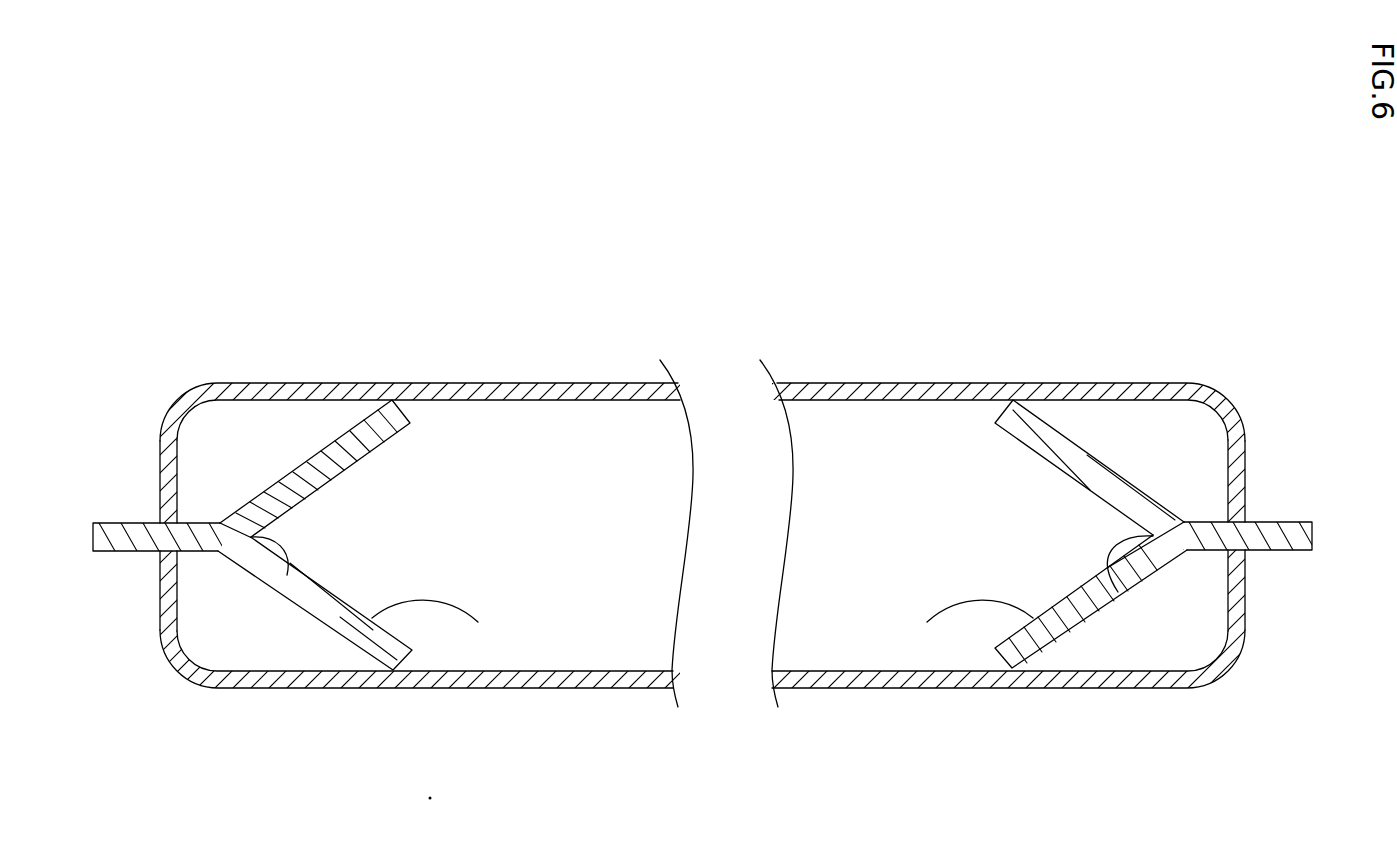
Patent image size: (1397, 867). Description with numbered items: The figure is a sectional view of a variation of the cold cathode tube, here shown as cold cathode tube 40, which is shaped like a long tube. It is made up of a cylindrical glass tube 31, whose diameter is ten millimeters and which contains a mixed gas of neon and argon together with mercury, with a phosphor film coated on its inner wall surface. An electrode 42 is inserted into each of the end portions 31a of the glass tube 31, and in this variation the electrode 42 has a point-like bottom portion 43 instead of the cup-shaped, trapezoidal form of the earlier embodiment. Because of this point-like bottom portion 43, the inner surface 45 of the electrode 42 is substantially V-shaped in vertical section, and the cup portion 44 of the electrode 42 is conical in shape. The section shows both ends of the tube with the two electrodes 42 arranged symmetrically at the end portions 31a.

The cold cathode tube 40 is at (247, 369).
The glass tube 31 is at (610, 383).
The end portions 31a is at (160, 498).
The electrode 42 is at (303, 613).
The bottom portion 43 is at (287, 575).
The cup portion 44 is at (347, 618).
The inner surface 45 is at (478, 622).